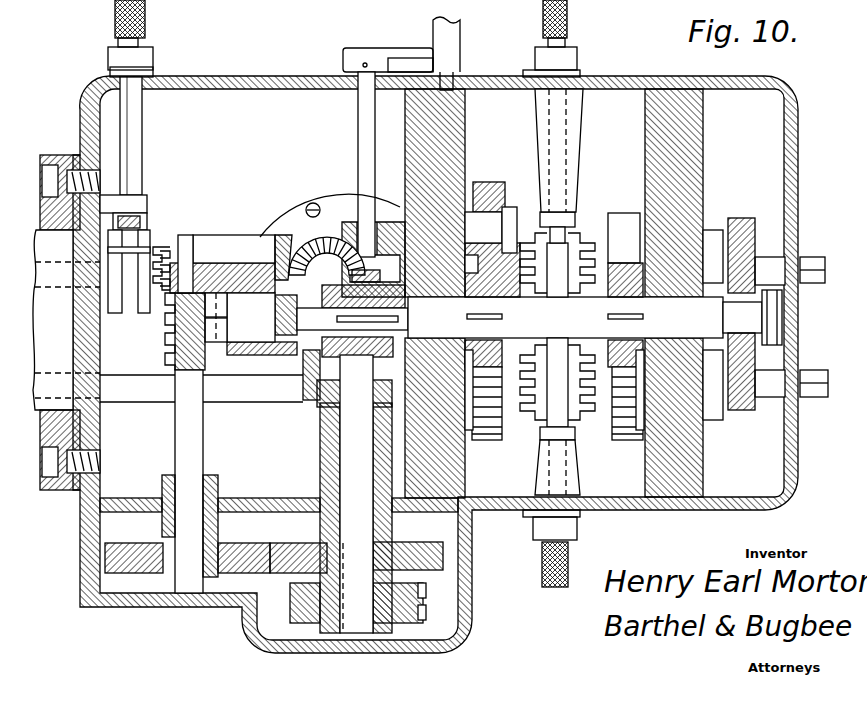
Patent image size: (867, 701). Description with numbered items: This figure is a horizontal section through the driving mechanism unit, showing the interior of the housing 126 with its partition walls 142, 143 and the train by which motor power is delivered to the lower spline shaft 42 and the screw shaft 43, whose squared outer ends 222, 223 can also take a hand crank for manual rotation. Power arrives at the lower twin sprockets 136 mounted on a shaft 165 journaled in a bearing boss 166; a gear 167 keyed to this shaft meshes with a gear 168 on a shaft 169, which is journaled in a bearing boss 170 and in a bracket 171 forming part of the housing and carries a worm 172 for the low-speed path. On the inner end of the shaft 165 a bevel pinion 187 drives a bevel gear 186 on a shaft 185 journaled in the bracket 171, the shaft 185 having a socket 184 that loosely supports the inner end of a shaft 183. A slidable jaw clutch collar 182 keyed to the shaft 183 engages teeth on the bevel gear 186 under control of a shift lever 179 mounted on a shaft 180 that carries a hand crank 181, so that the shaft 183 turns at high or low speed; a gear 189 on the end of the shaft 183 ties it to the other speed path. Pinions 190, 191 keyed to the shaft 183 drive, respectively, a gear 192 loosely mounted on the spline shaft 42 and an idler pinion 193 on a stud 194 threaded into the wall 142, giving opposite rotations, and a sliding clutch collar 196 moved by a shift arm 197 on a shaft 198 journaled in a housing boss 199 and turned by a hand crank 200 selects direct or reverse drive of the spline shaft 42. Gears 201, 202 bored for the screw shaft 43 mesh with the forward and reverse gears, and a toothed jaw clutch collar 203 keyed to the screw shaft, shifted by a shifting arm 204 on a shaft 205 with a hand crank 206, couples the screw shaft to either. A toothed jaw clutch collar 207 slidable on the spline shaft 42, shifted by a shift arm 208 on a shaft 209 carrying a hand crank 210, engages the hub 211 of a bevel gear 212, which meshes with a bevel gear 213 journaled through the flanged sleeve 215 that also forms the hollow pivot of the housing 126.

The lower spline shaft 42 is at (50, 290).
The screw shaft 43 is at (125, 392).
The housing 126 is at (258, 78).
The lower twin sprockets 136 is at (426, 612).
The partition wall 142 is at (460, 125).
The partition wall 143 is at (650, 150).
The shaft 165 is at (352, 482).
The bearing boss 166 is at (326, 458).
The gear 167 is at (300, 548).
The gear 168 is at (250, 548).
The shaft 169 is at (195, 448).
The bearing boss 170 is at (163, 495).
The bracket 171 is at (222, 250).
The worm 172 is at (175, 346).
The shift lever 179 is at (352, 274).
The shaft 180 is at (365, 155).
The hand crank 181 is at (400, 50).
The slidable jaw clutch collar 182 is at (386, 350).
The shaft 183 is at (595, 317).
The socket 184 is at (275, 307).
The shaft 185 is at (275, 327).
The bevel gear 186 is at (305, 364).
The bevel pinion 187 is at (318, 400).
The gear 189 is at (740, 218).
The pinion 190 is at (615, 282).
The pinion 191 is at (500, 285).
The gear 192 is at (622, 213).
The idler pinion 193 is at (486, 182).
The stud 194 is at (506, 205).
The sliding clutch collar 196 is at (530, 232).
The shift arm 197 is at (560, 220).
The shaft 198 is at (575, 153).
The housing boss 199 is at (575, 125).
The hand crank 200 is at (575, 45).
The gear 201 is at (628, 435).
The gear 202 is at (488, 440).
The toothed jaw clutch collar 203 is at (536, 418).
The shifting arm 204 is at (565, 435).
The shaft 205 is at (548, 481).
The hand crank 206 is at (578, 540).
The toothed jaw clutch collar 207 is at (160, 235).
The shift arm 208 is at (150, 210).
The shaft 209 is at (135, 152).
The hand crank 210 is at (141, 56).
The hub 211 is at (178, 243).
The bevel gear 212 is at (270, 240).
The bevel gear 213 is at (320, 237).
The flanged sleeve 215 is at (280, 222).
The squared outer end 222 is at (812, 257).
The squared outer end 223 is at (810, 370).